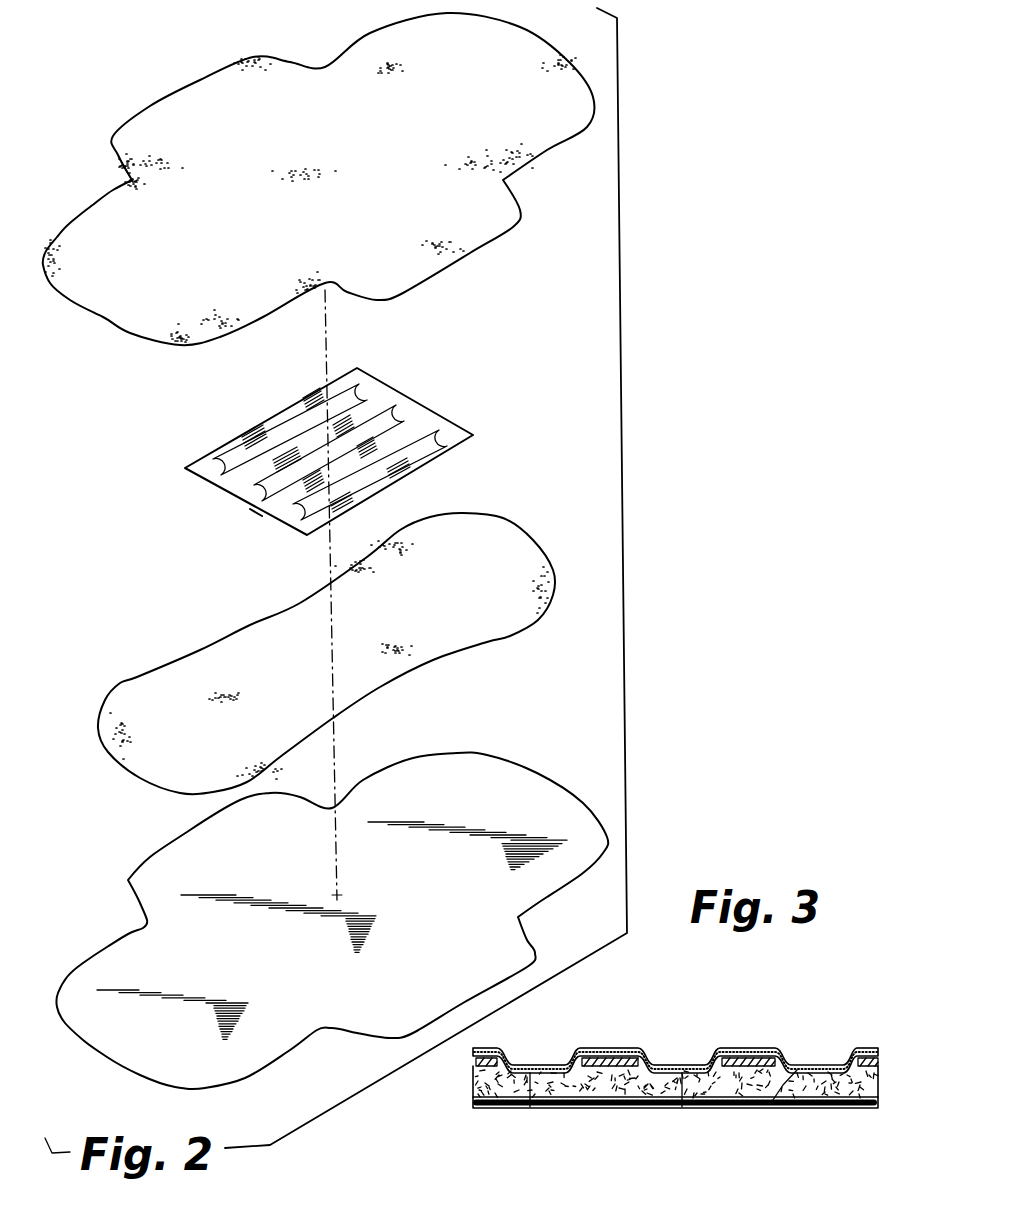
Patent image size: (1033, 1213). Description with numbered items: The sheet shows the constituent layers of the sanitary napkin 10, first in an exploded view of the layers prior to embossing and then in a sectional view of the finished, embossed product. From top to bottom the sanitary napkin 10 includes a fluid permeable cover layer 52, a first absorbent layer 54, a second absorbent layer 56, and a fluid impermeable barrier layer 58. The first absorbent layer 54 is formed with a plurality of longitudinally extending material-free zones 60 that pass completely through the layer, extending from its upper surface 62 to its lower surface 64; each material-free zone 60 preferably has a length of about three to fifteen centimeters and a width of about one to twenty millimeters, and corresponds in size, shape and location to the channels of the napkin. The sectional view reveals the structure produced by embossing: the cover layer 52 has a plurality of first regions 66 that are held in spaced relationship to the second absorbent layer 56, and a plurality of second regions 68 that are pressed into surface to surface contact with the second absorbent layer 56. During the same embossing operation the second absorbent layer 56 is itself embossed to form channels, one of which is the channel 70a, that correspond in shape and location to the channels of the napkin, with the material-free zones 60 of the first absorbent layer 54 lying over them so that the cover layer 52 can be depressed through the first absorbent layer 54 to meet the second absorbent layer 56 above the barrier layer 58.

In FIG. 2, the sanitary napkin 10 is at (636, 418).
In FIG. 2, the fluid permeable cover layer 52 is at (69, 212).
In FIG. 3, the fluid permeable cover layer 52 is at (728, 1038).
In FIG. 2, the first absorbent layer 54 is at (212, 440).
In FIG. 3, the first absorbent layer 54 is at (760, 1053).
In FIG. 2, the second absorbent layer 56 is at (136, 675).
In FIG. 3, the second absorbent layer 56 is at (502, 1092).
In FIG. 2, the fluid impermeable barrier layer 58 is at (89, 937).
In FIG. 3, the fluid impermeable barrier layer 58 is at (797, 1103).
In FIG. 2, the material-free zones 60 is at (288, 440).
In FIG. 2, the upper surface 62 is at (408, 408).
In FIG. 2, the lower surface 64 is at (258, 517).
In FIG. 3, the first regions 66 is at (498, 1050).
In FIG. 3, the second regions 68 is at (537, 1072).
In FIG. 3, the channel 70a is at (530, 1107).